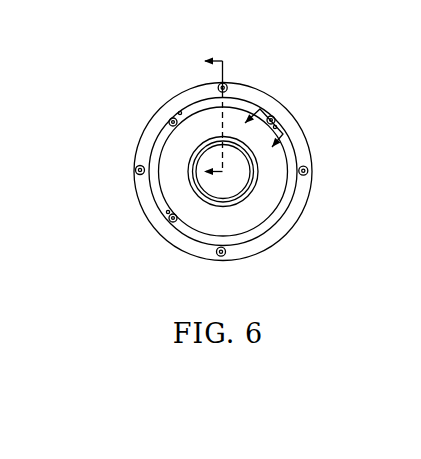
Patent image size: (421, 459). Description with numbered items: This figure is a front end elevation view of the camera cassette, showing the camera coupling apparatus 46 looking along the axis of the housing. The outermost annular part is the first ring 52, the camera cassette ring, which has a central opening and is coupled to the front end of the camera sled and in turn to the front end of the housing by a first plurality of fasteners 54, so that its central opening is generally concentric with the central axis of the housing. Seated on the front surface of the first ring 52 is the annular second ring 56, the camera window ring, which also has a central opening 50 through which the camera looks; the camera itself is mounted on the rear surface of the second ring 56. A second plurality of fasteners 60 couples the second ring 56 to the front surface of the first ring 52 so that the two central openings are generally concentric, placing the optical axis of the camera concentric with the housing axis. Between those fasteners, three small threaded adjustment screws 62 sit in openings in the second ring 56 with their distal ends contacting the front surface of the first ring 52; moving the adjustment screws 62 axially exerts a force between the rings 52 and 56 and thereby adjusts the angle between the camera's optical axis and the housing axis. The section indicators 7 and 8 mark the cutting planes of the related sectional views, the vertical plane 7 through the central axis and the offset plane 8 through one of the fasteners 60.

The camera coupling apparatus 46 is at (283, 70).
The central bore 50 is at (244, 184).
The first ring 52 is at (274, 237).
The first plurality of fasteners 54 is at (226, 84).
The second ring 56 is at (287, 145).
The second plurality of fasteners 60 is at (273, 117).
The adjustment screws 62 is at (179, 112).
The section line 7- 7 is at (203, 117).
The section line 8- 8 is at (255, 141).